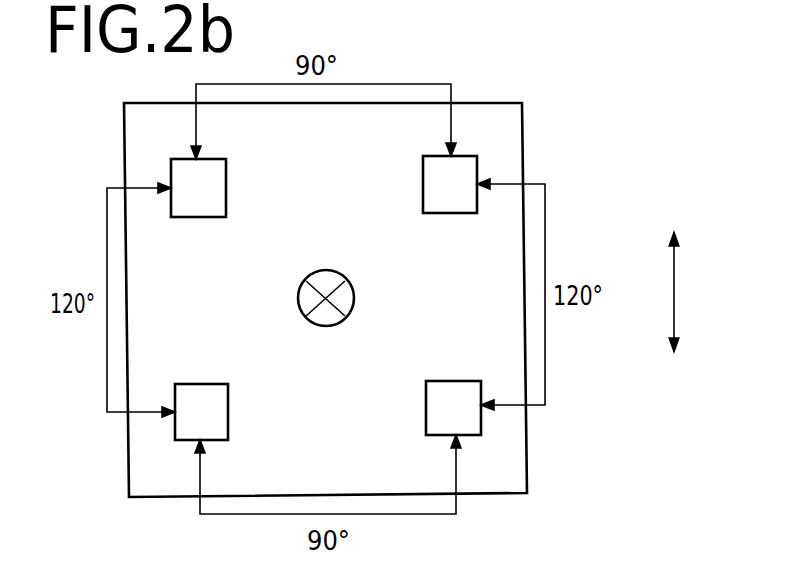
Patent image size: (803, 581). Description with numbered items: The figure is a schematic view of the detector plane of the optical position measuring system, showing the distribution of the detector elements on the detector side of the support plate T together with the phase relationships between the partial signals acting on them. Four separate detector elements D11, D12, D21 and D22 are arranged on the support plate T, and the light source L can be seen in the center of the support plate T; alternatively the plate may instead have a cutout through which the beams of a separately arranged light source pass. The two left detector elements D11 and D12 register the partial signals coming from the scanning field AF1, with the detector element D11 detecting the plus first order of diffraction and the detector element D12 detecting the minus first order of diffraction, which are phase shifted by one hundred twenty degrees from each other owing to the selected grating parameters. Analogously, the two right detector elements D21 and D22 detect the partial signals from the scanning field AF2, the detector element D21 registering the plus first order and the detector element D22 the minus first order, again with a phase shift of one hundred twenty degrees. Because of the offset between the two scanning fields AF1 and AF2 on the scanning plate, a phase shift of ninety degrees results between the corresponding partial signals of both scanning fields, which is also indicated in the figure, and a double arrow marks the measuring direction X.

The detector element D11 is at (198, 199).
The detector element D21 is at (447, 185).
The detector element D12 is at (198, 423).
The detector element D22 is at (447, 410).
The light source L is at (338, 298).
The support plate T is at (497, 457).
The X direction axis X is at (683, 292).
The scanning field AF1 is at (187, 544).
The scanning field AF2 is at (469, 544).